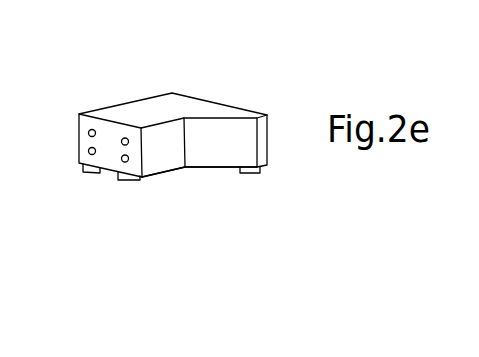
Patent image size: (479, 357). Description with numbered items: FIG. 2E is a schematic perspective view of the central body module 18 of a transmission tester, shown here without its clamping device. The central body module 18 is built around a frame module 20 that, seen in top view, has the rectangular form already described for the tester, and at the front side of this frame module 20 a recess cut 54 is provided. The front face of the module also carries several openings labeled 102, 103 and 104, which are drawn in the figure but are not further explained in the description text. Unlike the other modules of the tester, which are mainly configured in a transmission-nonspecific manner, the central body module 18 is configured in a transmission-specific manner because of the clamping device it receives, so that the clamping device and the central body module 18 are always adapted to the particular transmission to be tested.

The frame module 20 is at (225, 157).
The central body module 18 is at (192, 169).
The recess cut 54 is at (173, 171).
The aperture 102 is at (88, 131).
The apertures 103 is at (125, 138).
The aperture 104 is at (80, 153).